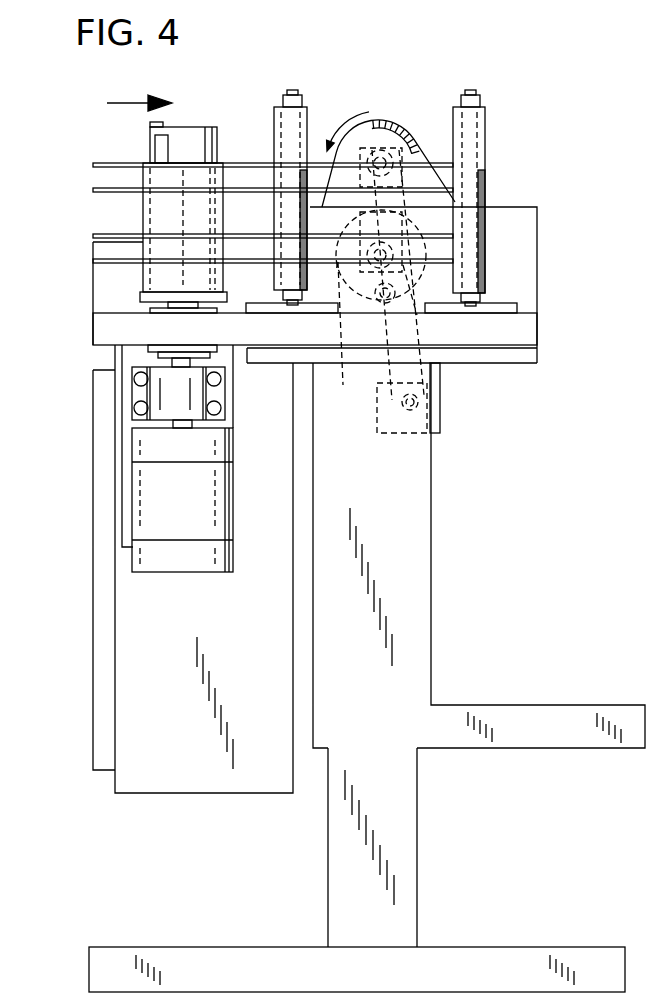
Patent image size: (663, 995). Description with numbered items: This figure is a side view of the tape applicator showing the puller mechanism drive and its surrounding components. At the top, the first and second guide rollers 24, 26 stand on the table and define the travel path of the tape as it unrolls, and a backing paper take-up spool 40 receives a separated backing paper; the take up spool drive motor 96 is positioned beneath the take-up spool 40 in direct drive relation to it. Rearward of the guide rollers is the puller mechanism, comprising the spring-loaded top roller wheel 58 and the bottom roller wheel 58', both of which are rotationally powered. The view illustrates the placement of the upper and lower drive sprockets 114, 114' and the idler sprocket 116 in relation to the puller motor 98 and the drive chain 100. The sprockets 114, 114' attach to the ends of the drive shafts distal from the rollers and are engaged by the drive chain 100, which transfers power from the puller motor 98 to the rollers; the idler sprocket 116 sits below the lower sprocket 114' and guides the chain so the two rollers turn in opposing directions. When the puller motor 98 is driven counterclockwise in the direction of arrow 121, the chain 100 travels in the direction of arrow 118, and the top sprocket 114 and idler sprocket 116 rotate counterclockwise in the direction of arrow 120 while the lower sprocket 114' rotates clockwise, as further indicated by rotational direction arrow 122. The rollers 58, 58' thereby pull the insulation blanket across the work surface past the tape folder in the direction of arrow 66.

The first guide roller 24 is at (487, 130).
The second guide roller 26 is at (274, 128).
The backing paper take-up spool 40 is at (94, 236).
The top roller wheel 58 is at (388, 136).
The bottom roller wheel 58' is at (463, 255).
The arrow 66 is at (124, 101).
The take up spool drive motor 96 is at (180, 522).
The puller motor 98 is at (440, 402).
The drive chain 100 is at (422, 382).
The upper drive sprocket 114 is at (378, 118).
The lower drive sprocket 114' is at (481, 238).
The idler sprocket 116 is at (420, 281).
The arrow 118 is at (423, 333).
The arrow 120 is at (340, 127).
The arrow 121 is at (387, 407).
The rotational direction arrow 122 is at (374, 282).